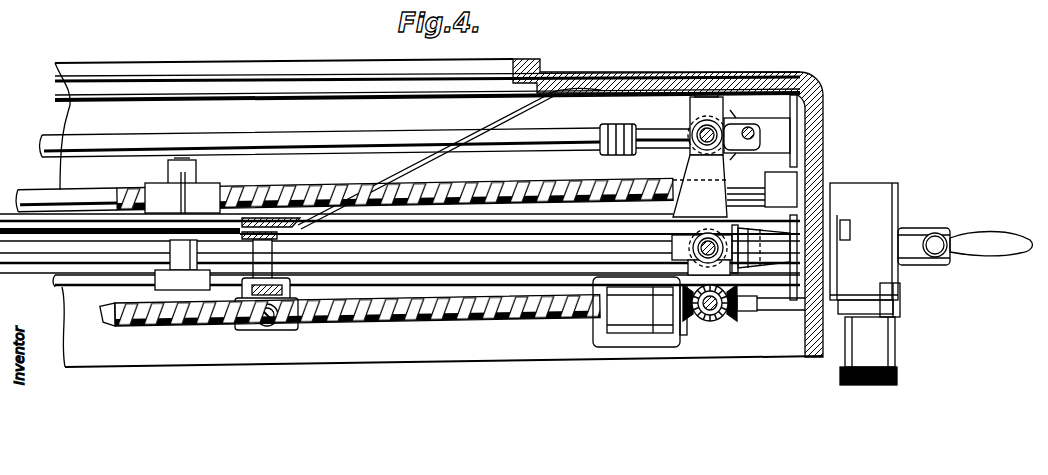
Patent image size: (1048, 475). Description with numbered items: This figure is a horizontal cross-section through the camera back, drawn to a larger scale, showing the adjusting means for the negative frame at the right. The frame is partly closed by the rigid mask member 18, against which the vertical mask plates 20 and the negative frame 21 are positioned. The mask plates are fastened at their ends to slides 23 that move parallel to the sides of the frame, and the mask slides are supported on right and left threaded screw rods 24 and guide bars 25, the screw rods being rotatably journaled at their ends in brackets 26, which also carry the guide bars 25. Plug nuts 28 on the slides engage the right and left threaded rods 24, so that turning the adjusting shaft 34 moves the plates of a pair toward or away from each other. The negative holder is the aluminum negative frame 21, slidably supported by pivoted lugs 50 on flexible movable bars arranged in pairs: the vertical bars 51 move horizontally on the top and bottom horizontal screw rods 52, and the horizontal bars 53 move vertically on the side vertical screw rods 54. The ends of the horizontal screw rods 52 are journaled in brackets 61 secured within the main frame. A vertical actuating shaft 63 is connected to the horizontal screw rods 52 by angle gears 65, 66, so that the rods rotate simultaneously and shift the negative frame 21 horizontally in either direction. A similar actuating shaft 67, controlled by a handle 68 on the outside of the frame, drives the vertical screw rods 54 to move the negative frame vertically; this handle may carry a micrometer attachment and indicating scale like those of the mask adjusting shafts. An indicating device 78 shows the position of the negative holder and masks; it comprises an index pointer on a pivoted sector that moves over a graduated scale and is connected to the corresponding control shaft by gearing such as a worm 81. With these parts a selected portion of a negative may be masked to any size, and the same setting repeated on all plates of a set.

The rigid mask member 18 is at (486, 124).
The vertical mask plate 20 is at (373, 225).
The negative frame 21 is at (283, 237).
The slide 23 is at (262, 177).
The right and left threaded screw rod 24 is at (696, 130).
The guide bar 25 is at (750, 120).
The bracket 26 is at (793, 132).
The plug nut 28 is at (184, 158).
The adjusting shaft 34 is at (377, 138).
The pivoted lug 50 is at (178, 277).
The vertical bar 51 is at (267, 300).
The horizontal screw rod 52 is at (480, 310).
The horizontal bar 53 is at (128, 280).
The vertical screw rod 54 is at (697, 247).
The bracket 61 is at (668, 322).
The vertical actuating shaft 63 is at (732, 322).
The angle gear 65 is at (730, 314).
The angle gear 66 is at (686, 333).
The actuating shaft 67 is at (470, 252).
The handle 68 is at (975, 240).
The indicating device 78 is at (900, 312).
The worm 81 is at (610, 148).